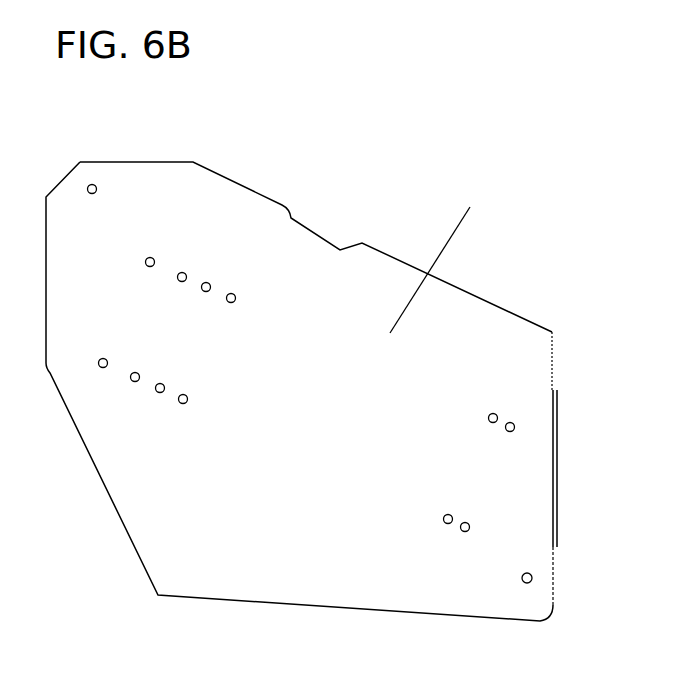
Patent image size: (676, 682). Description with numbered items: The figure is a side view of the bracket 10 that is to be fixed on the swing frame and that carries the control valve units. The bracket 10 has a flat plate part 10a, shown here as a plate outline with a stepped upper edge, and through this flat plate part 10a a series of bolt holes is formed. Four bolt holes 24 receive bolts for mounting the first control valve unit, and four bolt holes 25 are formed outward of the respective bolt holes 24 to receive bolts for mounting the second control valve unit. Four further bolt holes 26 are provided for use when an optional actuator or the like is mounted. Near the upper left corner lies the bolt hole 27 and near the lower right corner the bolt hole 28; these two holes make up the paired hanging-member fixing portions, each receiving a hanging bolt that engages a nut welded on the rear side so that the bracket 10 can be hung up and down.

The bracket 10 is at (386, 250).
The flat plate part 10a is at (444, 256).
The bolt holes 24 is at (233, 294).
The bolt holes 25 is at (208, 283).
The bolt holes 26 is at (148, 258).
The bolt hole 27 is at (89, 185).
The bolt hole 28 is at (532, 580).